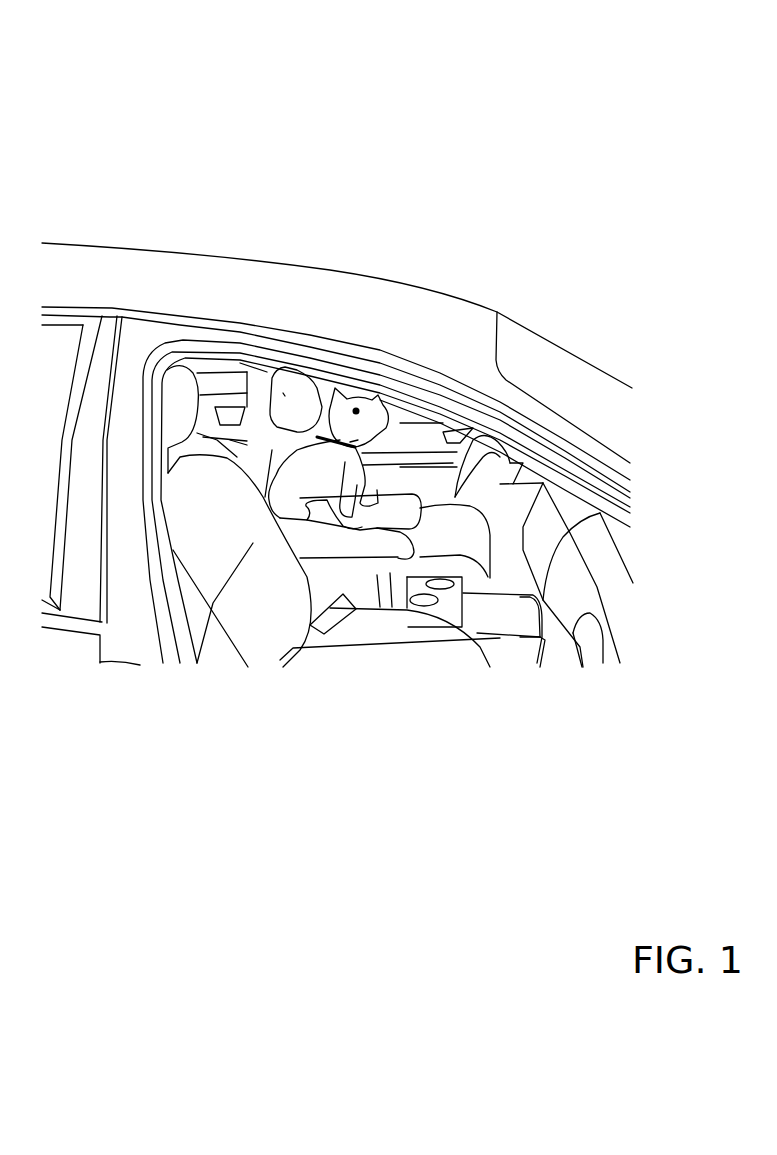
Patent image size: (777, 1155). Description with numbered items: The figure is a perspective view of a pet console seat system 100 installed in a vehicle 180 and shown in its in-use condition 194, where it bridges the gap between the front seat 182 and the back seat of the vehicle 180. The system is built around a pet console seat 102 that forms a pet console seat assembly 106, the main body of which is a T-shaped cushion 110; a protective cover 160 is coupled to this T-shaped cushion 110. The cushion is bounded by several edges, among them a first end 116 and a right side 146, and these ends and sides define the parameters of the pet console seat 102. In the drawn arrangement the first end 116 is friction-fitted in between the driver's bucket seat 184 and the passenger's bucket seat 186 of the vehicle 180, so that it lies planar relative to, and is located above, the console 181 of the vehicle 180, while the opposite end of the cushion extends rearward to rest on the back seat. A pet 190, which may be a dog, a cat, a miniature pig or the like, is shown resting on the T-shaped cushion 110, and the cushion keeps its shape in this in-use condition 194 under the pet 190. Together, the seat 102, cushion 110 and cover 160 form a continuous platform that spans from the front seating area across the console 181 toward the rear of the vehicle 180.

The pet console seat system 100 is at (533, 113).
The pet console seat 102 is at (388, 533).
The pet console seat assembly 106 is at (420, 475).
The T-shaped cushion 110 is at (393, 480).
The first end 116 is at (370, 567).
The right side 146 is at (338, 551).
The protective cover 160 is at (414, 516).
The vehicle 180 is at (110, 244).
The console 181 is at (382, 567).
The front seat 182 is at (308, 421).
The driver's bucket seat 184 is at (283, 393).
The passenger's bucket seat 186 is at (228, 528).
The pet 190 is at (376, 410).
The in-use condition 194 is at (548, 170).